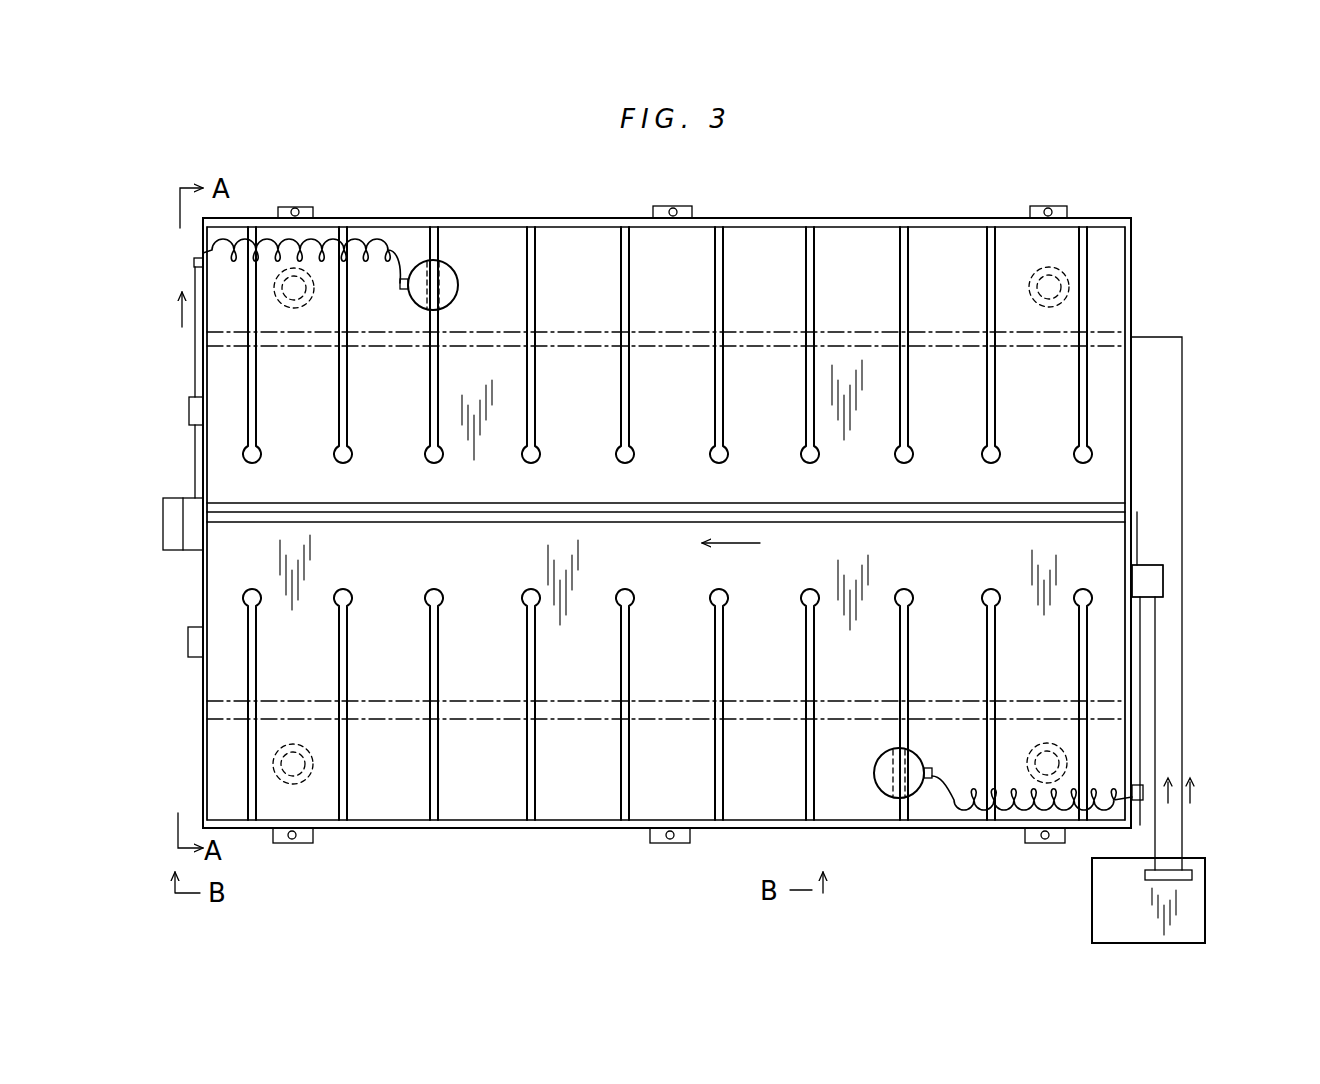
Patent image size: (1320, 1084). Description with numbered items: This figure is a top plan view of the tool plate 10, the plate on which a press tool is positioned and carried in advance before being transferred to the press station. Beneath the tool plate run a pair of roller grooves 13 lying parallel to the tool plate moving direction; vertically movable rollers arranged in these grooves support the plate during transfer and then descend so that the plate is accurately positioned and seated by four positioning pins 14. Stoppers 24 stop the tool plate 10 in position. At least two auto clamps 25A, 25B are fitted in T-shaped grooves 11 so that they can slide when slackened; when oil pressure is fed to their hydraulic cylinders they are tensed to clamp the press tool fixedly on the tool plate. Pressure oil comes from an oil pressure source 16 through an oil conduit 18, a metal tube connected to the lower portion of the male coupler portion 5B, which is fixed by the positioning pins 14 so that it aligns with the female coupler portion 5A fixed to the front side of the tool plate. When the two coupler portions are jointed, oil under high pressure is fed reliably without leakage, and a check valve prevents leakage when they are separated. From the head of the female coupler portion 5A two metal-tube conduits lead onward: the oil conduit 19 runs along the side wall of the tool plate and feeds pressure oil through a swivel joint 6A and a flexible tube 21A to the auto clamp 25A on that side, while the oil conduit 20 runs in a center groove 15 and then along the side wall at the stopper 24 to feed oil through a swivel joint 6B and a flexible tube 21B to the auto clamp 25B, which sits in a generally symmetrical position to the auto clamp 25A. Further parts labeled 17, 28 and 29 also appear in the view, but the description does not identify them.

The tool plate 10 is at (740, 242).
The T-shaped grooves 11 is at (535, 246).
The roller grooves 13 is at (748, 340).
The positioning pins 14 is at (300, 308).
The center groove 15 is at (932, 512).
The oil pressure source 16 is at (1100, 905).
The pipe 17 is at (1184, 735).
The oil conduit 18 is at (1158, 690).
The oil conduit 19 is at (1143, 658).
The oil conduit 20 is at (730, 512).
The flexible tube 21A is at (965, 802).
The flexible tube 21B is at (370, 250).
The stoppers 24 is at (190, 405).
The auto clamp 25A is at (880, 768).
The auto clamp 25B is at (447, 268).
The connector box 28 is at (165, 500).
The mounting tab 29 is at (325, 196).
The female coupler portion 5A is at (1160, 565).
The male coupler portion 5B is at (1147, 581).
The swivel joint 6A is at (1137, 802).
The swivel joint 6B is at (194, 262).